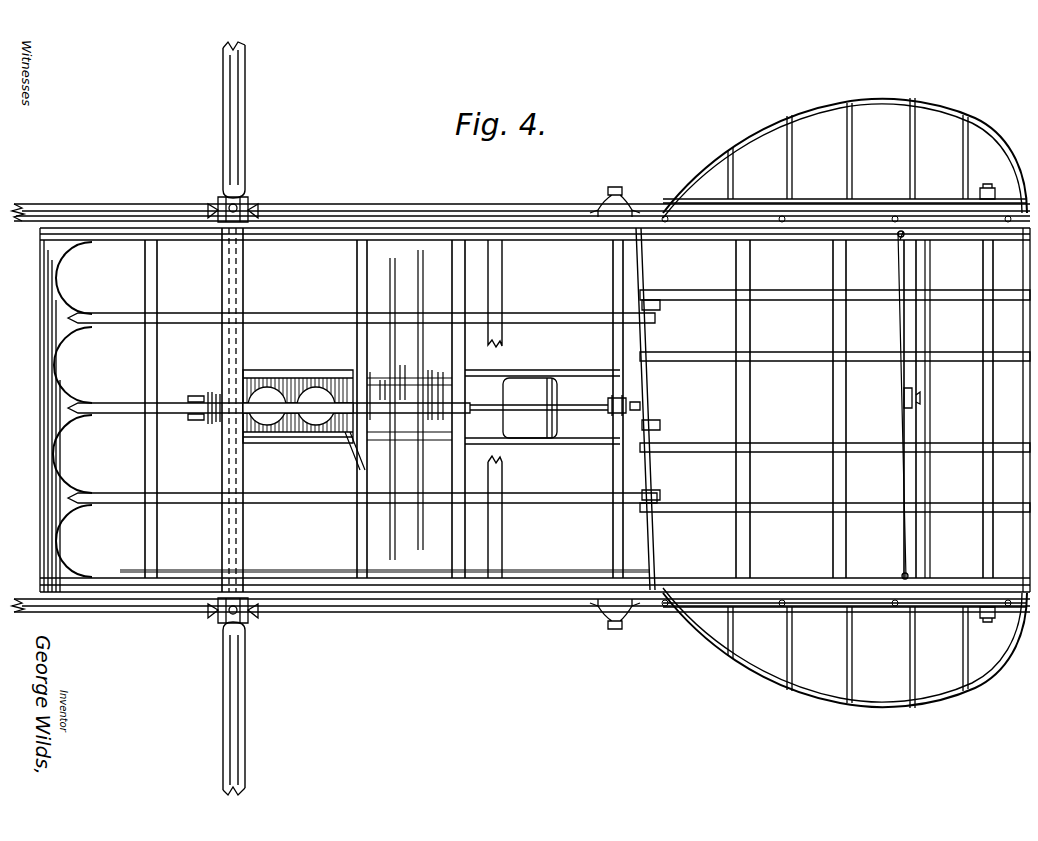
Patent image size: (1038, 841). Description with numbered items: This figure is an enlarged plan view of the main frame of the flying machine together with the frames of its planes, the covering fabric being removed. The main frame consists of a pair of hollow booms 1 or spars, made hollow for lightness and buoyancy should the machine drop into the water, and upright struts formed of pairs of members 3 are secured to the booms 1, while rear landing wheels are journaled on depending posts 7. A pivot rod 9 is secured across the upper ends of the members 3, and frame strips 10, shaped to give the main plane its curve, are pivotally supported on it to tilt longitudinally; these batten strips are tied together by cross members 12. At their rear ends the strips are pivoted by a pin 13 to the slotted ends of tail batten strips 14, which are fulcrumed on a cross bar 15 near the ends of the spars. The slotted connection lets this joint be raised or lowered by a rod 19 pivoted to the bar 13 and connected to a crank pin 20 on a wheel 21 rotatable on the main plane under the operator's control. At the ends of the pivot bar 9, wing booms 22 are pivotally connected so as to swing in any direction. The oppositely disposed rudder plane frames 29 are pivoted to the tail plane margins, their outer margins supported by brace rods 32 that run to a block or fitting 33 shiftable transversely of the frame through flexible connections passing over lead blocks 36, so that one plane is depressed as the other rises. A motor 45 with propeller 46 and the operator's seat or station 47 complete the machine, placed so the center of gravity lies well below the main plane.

The boom 1 is at (148, 207).
The upright strut member 3 is at (244, 200).
The depending post 7 is at (618, 186).
The pivot rod 9 is at (244, 538).
The frame strip 10 is at (172, 316).
The cross member 12 is at (145, 466).
The pin 13 is at (654, 476).
The batten strip 14 is at (770, 292).
The cross bar 15 is at (918, 330).
The rod 19 is at (646, 418).
The crank pin 20 is at (610, 398).
The wheel 21 is at (644, 402).
The wing boom 22 is at (246, 140).
The rudder plane frame 29 is at (815, 112).
The brace rod 32 is at (916, 166).
The block or fitting 33 is at (904, 400).
The lead block 36 is at (896, 236).
The motor 45 is at (274, 378).
The propeller 46 is at (196, 422).
The operator's seat or station 47 is at (539, 408).